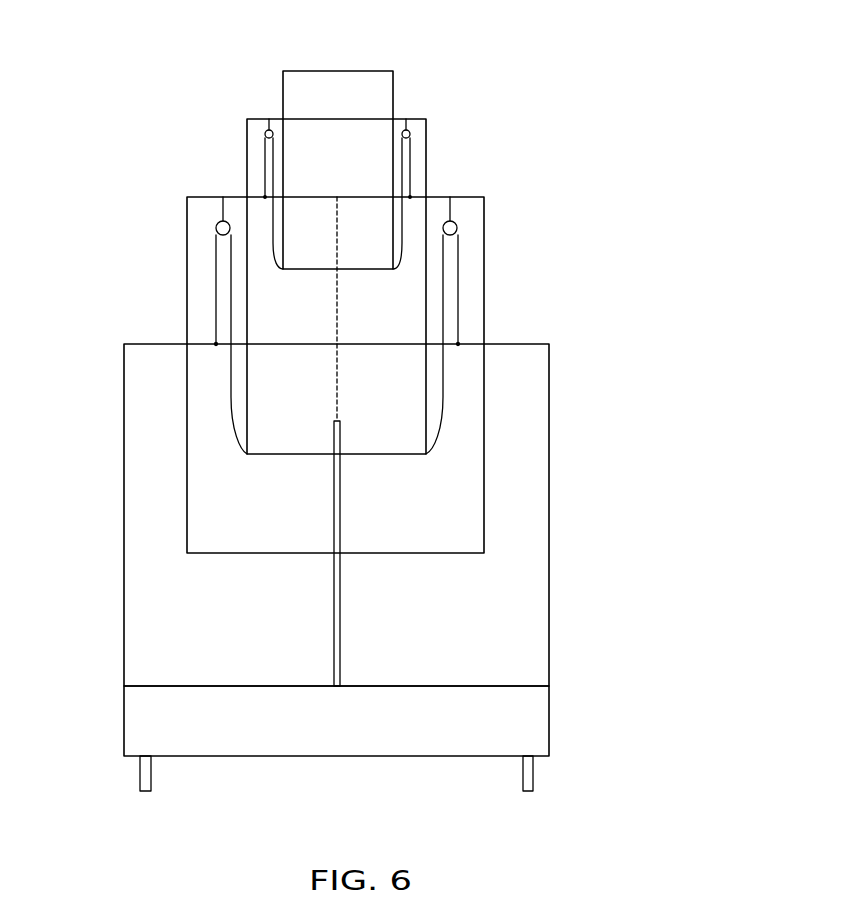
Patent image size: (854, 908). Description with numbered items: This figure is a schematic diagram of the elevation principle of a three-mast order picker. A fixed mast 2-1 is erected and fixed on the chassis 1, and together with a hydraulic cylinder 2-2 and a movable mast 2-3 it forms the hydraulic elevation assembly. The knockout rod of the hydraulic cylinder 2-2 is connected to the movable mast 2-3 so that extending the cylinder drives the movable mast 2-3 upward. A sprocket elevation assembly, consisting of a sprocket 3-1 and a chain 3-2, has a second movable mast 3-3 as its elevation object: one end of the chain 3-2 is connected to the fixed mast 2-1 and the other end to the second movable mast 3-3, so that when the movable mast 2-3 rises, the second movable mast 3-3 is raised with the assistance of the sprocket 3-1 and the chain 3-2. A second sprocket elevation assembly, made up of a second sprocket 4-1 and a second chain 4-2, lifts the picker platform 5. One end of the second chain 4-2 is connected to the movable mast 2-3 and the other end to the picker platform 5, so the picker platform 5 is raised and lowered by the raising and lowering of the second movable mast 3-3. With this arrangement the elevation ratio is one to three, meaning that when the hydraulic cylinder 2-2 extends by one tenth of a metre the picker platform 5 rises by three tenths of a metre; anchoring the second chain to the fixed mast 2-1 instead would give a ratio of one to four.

The chassis 1 is at (500, 727).
The fixed mast 2-1 is at (549, 606).
The hydraulic cylinder 2-2 is at (336, 523).
The movable mast 2-3 is at (485, 275).
The sprocket 3-1 is at (455, 223).
The chain 3-2 is at (458, 325).
The second movable mast 3-3 is at (427, 147).
The second sprocket 4-1 is at (265, 132).
The second chain 4-2 is at (266, 195).
The picker platform 5 is at (300, 97).